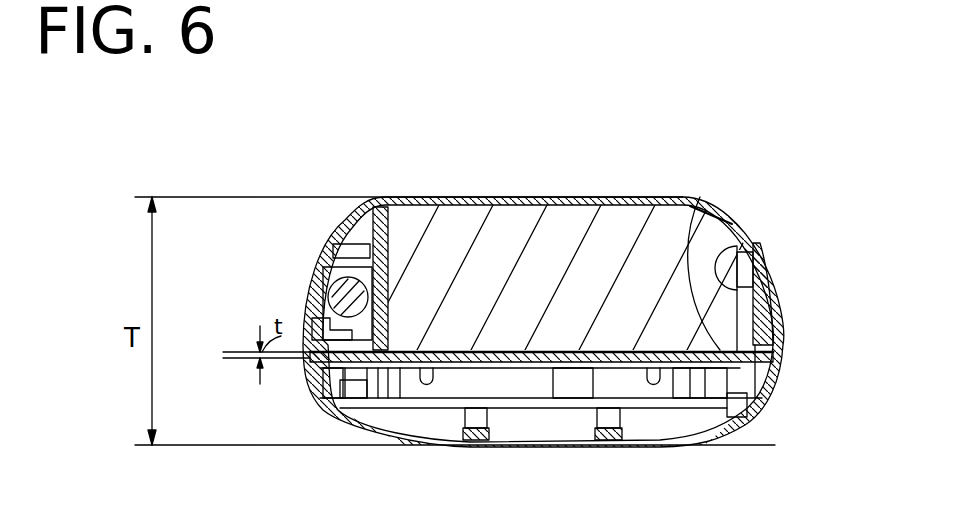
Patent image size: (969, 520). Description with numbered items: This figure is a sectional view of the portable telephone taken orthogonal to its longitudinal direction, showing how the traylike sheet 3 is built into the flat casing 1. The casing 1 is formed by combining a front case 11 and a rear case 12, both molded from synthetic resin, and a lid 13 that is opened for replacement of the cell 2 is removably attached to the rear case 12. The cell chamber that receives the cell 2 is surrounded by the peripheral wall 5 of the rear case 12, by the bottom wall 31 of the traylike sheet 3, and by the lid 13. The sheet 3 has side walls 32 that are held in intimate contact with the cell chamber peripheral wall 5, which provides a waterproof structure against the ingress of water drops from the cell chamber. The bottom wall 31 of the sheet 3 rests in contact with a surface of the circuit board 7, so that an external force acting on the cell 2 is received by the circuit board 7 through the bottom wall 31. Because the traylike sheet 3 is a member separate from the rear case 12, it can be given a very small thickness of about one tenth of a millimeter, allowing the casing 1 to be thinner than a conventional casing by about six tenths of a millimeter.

The casing 1 is at (846, 312).
The front case 11 is at (770, 398).
The rear case 12 is at (774, 308).
The lid 13 is at (509, 205).
The cell 2 is at (579, 220).
The traylike sheet 3 is at (636, 352).
The bottom wall 31 is at (581, 352).
The side walls 32 is at (700, 197).
The peripheral wall 5 is at (389, 293).
The circuit board 7 is at (467, 363).